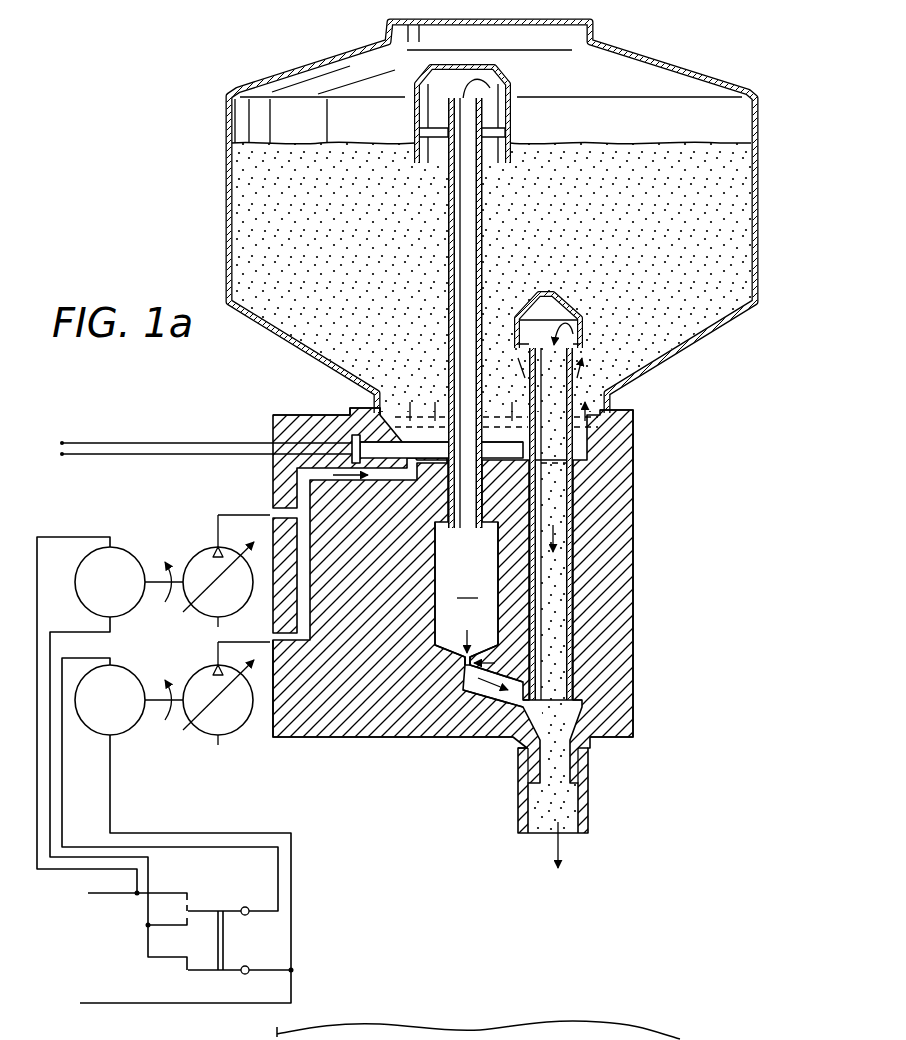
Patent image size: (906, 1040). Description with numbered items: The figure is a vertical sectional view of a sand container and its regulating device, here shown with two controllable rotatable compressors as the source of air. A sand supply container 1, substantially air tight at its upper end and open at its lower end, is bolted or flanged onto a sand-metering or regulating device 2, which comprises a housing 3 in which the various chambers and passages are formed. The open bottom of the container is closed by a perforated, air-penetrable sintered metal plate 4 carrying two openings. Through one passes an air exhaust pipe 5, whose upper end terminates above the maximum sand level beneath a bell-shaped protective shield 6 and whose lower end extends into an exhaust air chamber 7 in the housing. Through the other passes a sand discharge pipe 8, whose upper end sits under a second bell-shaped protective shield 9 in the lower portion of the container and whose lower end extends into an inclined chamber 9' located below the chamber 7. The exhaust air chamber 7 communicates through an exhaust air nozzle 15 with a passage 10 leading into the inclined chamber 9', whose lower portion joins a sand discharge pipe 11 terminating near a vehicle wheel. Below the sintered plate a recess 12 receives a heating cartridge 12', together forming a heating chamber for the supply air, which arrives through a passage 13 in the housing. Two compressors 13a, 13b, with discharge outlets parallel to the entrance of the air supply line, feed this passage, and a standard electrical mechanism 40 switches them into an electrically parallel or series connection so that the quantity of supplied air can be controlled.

The sand supply container 1 is at (705, 113).
The regulating device 2 is at (664, 606).
The housing 3 is at (641, 664).
The sintered metal plate 4 is at (500, 421).
The air exhaust pipe 5 is at (453, 272).
The bell-shaped protective shield 6 is at (503, 72).
The chamber 7 is at (466, 593).
The sand discharge pipe 8 is at (560, 520).
The bell-shaped protective shield 9 is at (554, 321).
The chamber 9' is at (580, 741).
The passage 10 is at (500, 697).
The sand discharge pipe 11 is at (572, 810).
The recess 12 is at (355, 458).
The heating cartridge 12' is at (441, 409).
The passage 13 is at (305, 497).
The compressor 13a is at (198, 533).
The compressor 13b is at (198, 747).
The exhaust air nozzle 15 is at (463, 662).
The electrical mechanism 40 is at (266, 942).